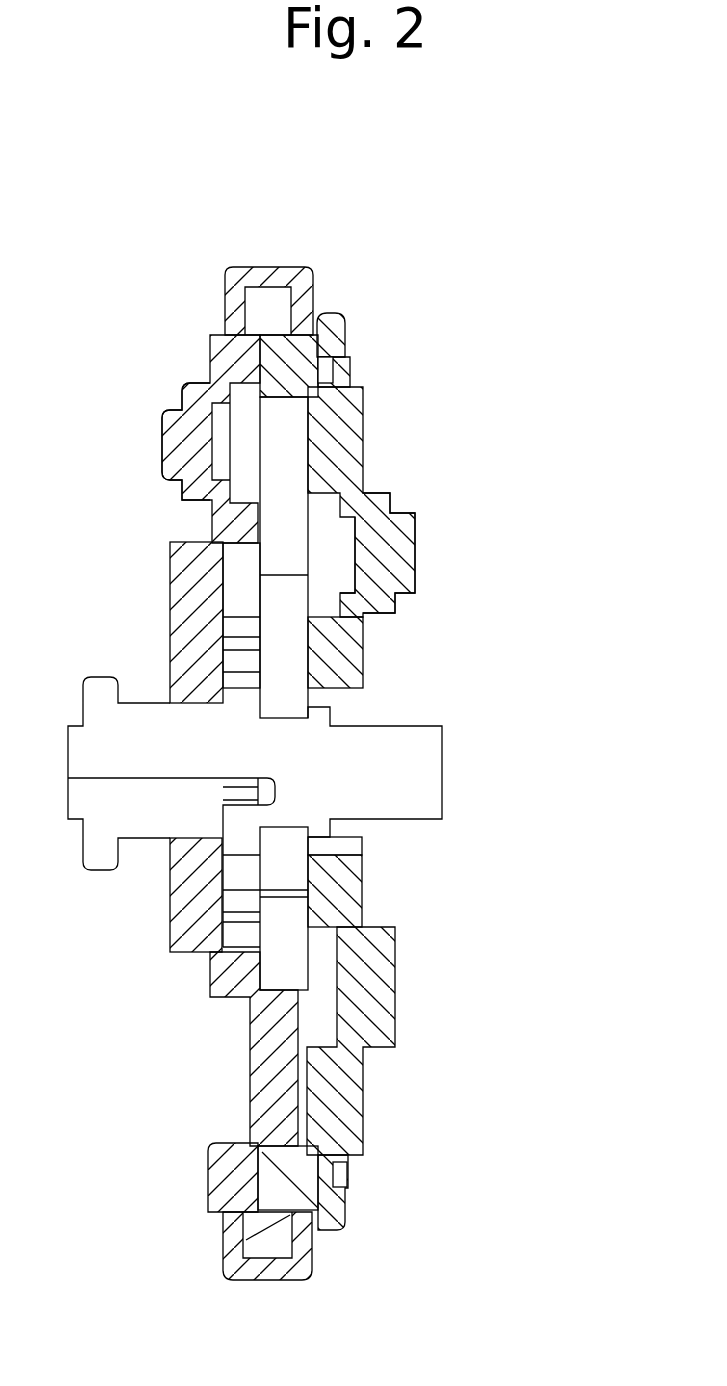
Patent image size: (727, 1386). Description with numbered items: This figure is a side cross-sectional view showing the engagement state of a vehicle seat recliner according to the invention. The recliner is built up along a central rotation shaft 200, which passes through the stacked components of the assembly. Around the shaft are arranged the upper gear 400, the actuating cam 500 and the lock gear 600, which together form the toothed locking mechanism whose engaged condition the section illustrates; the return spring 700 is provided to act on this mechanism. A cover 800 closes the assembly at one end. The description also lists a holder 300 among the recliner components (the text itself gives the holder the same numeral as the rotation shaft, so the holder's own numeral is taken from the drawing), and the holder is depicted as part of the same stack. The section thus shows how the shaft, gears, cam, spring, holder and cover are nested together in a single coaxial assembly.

The cover 800 is at (313, 278).
The upper gear 400 is at (365, 420).
The flange member 300 is at (172, 440).
The lock gear 600 is at (293, 528).
The return spring 700 is at (245, 632).
The actuating cam 500 is at (302, 667).
The rotation shaft 200 is at (447, 773).